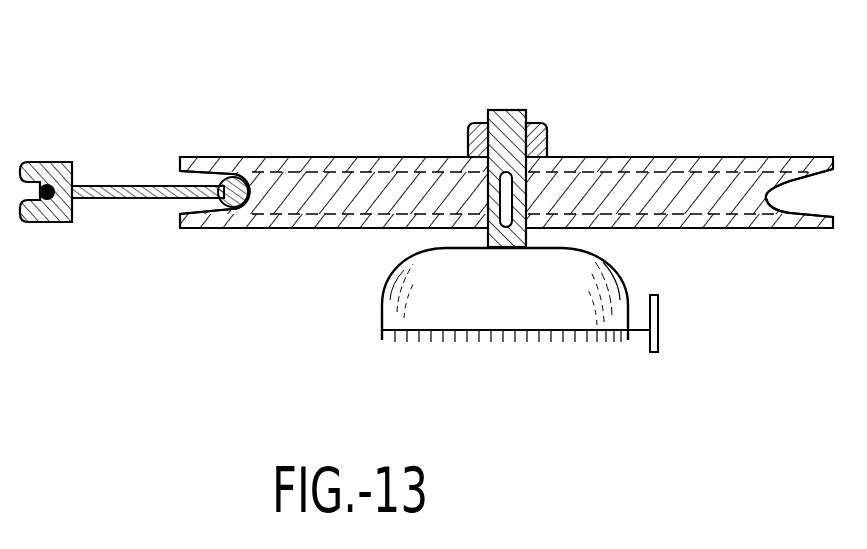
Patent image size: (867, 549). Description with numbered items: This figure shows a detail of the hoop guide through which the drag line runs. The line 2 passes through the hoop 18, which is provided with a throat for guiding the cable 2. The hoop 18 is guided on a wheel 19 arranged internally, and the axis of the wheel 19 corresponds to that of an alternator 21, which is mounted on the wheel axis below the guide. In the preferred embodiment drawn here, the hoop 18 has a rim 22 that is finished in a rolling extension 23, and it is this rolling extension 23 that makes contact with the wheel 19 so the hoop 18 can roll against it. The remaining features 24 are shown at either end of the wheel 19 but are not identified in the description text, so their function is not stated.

The line 2 is at (44, 178).
The hoop 18 is at (67, 163).
The wheel 19 is at (370, 183).
The alternator 21 is at (553, 290).
The rim 22 is at (139, 197).
The rolling extension 23 is at (238, 172).
The groove 24 is at (200, 206).